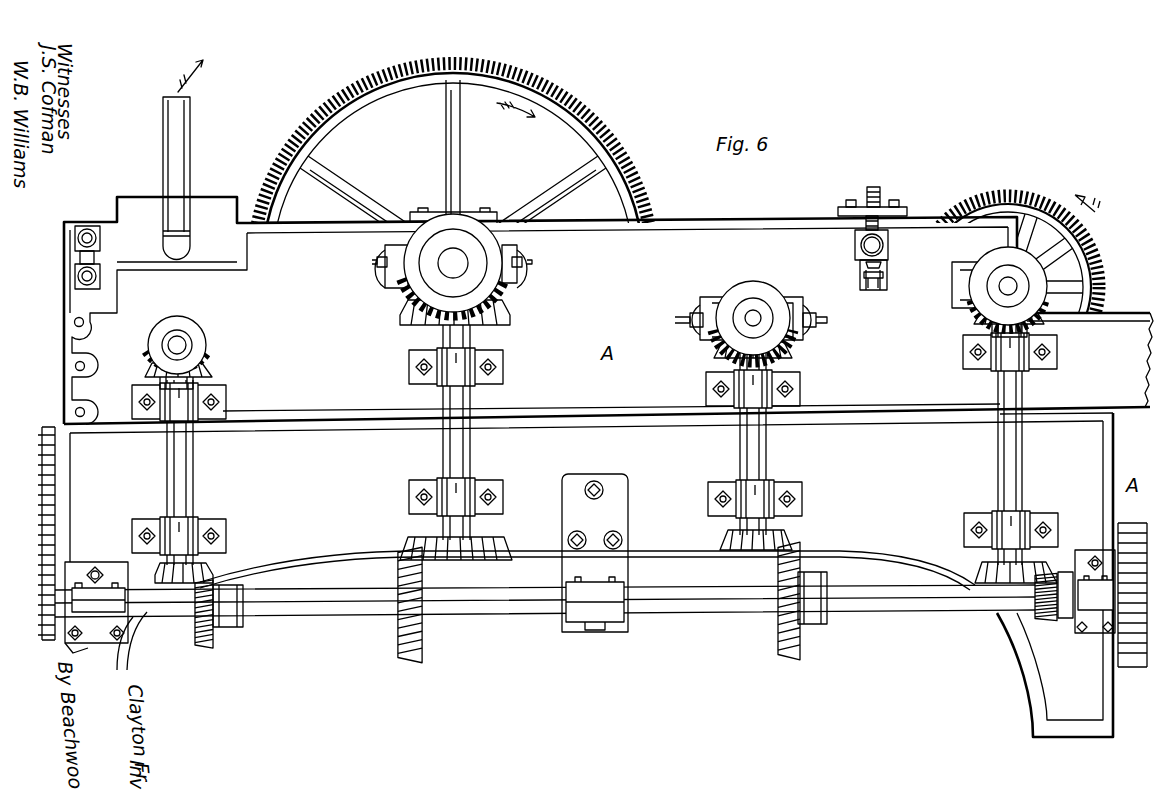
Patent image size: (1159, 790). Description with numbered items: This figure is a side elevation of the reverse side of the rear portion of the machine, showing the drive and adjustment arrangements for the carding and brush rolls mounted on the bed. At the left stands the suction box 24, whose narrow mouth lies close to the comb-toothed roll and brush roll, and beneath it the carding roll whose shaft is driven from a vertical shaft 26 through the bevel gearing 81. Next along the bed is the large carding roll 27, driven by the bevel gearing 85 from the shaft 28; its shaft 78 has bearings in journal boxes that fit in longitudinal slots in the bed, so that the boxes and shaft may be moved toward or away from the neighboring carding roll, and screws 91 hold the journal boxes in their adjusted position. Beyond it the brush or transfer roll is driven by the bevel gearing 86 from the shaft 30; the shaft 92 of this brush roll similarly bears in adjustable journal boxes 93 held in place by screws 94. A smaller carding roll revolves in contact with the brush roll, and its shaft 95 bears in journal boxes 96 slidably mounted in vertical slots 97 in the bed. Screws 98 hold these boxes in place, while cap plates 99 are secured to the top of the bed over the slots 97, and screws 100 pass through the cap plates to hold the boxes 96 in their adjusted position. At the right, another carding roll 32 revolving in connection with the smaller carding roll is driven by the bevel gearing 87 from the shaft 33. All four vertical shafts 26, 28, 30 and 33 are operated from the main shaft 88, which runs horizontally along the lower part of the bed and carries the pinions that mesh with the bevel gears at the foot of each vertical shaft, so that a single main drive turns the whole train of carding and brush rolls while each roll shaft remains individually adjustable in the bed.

The suction box 24 is at (163, 160).
The shaft 26 is at (181, 478).
The large carding roll 27 is at (616, 143).
The shaft 28 is at (462, 446).
The shaft 30 is at (757, 459).
The carding roll 32 is at (1087, 261).
The shaft 33 is at (1012, 467).
The shaft of the carding roll 78 is at (458, 267).
The bevel gearing 81 is at (198, 330).
The bevel gearing 85 is at (462, 248).
The bevel gearing 86 is at (758, 312).
The bevel gearing 87 is at (988, 267).
The main shaft 88 is at (503, 605).
The screws 91 is at (390, 270).
The shaft of the brush roll 92 is at (752, 318).
The journal boxes 93 is at (793, 306).
The screws 94 is at (705, 333).
The shaft of the small carding roll 95 is at (888, 245).
The journal boxes 96 is at (853, 232).
The vertical slots 97 is at (864, 288).
The screws 98 is at (882, 282).
The cap plates 99 is at (903, 207).
The screws 100 is at (878, 188).